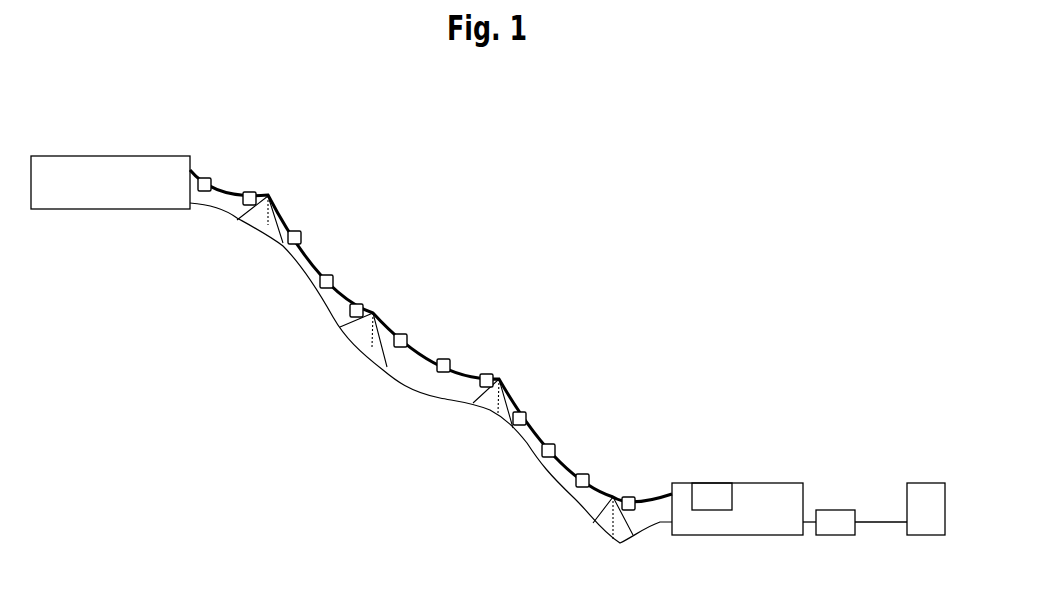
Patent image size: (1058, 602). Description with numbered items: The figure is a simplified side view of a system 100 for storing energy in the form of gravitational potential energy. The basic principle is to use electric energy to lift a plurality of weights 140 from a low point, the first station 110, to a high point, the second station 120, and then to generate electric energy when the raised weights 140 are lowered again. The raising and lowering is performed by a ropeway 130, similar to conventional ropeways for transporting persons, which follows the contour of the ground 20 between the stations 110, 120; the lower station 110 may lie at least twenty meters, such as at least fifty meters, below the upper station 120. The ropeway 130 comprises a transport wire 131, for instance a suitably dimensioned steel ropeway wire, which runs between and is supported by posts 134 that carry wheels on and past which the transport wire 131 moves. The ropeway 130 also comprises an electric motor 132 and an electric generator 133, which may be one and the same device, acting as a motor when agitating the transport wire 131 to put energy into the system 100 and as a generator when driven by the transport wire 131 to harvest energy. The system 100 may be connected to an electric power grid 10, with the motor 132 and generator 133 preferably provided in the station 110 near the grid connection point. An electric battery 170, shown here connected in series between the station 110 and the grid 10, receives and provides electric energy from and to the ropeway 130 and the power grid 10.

The system 100 is at (582, 187).
The ground 20 is at (481, 460).
The second station 120 is at (110, 182).
The ropeway 130 is at (431, 336).
The transport wire 131 is at (467, 367).
The posts 134 is at (266, 198).
The weights 140 is at (363, 303).
The first station 110 is at (735, 455).
The electric motor 132 is at (700, 443).
The electric generator 133 is at (712, 480).
The electric battery 170 is at (835, 522).
The electric power grid 10 is at (926, 509).